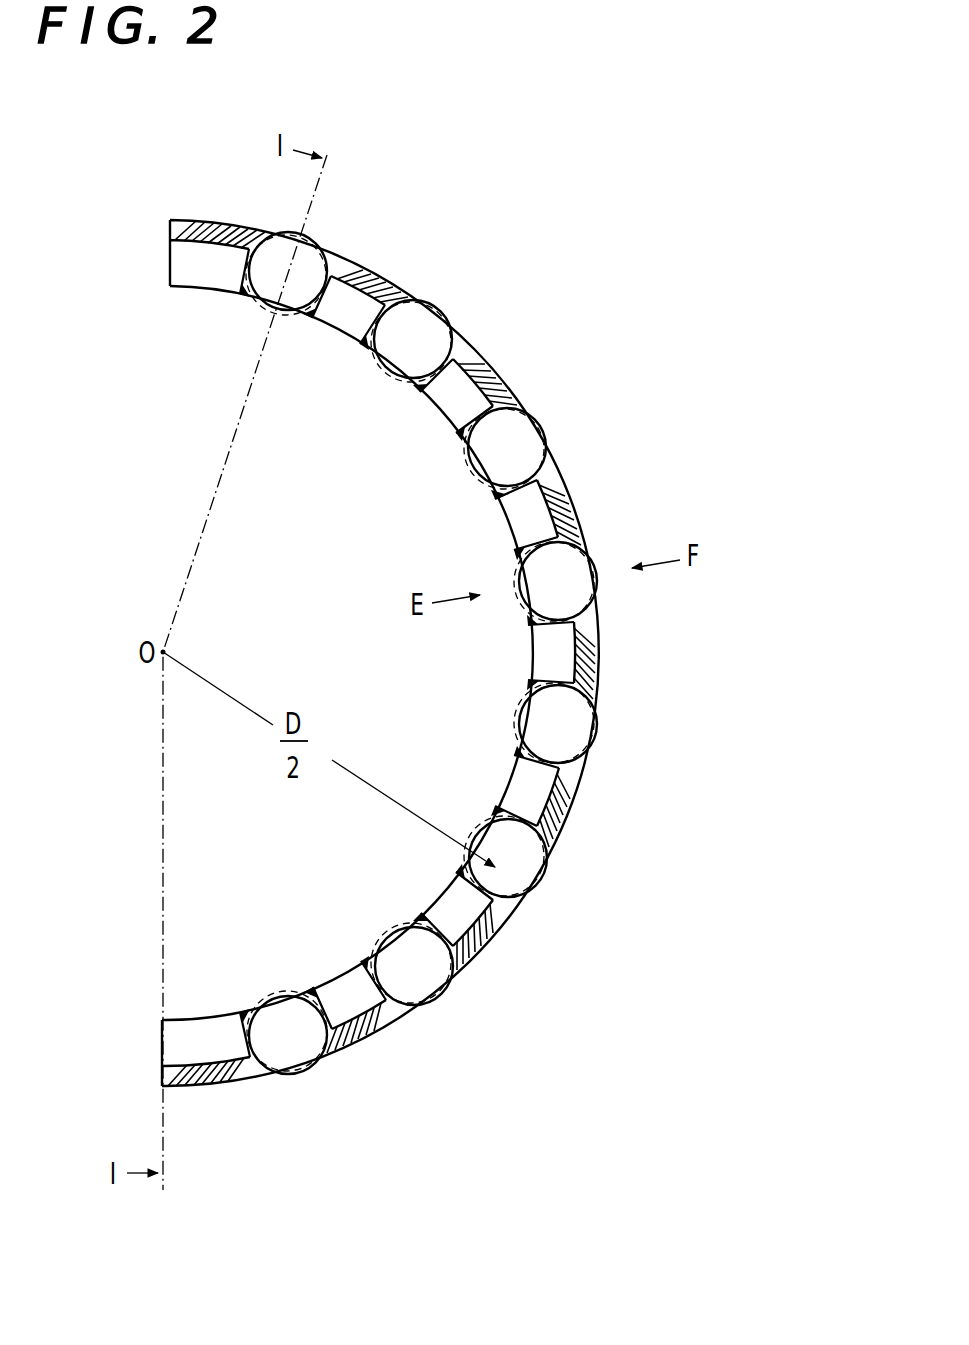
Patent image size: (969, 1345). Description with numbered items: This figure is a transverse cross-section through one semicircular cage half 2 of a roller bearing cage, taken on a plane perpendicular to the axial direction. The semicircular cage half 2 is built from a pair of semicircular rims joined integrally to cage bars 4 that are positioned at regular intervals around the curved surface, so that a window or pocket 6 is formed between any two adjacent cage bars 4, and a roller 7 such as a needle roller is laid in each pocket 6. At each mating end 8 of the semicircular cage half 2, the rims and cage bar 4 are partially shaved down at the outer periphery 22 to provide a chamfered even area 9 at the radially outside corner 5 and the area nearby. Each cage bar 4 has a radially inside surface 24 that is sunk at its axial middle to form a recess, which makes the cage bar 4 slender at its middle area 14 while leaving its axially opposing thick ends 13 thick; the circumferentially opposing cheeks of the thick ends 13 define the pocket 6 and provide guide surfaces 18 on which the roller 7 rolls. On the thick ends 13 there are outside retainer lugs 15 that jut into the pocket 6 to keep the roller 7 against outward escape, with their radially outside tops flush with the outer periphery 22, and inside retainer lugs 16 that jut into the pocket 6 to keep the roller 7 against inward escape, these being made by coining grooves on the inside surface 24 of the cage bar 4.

The semicircular cage half 2 is at (546, 297).
The cage bar 4 is at (393, 631).
The radially outside corner 5 is at (368, 632).
The pocket 6 is at (479, 986).
The roller 7 is at (469, 709).
The mating end 8 is at (138, 650).
The chamfered even area 9 is at (162, 654).
The thick end 13 is at (431, 754).
The middle area 14 is at (448, 940).
The outside retainer lug 15 is at (575, 633).
The inside retainer lug 16 is at (319, 674).
The guide surface 18 is at (371, 523).
The outer periphery 22 is at (629, 497).
The radially inside surface 24 is at (432, 891).